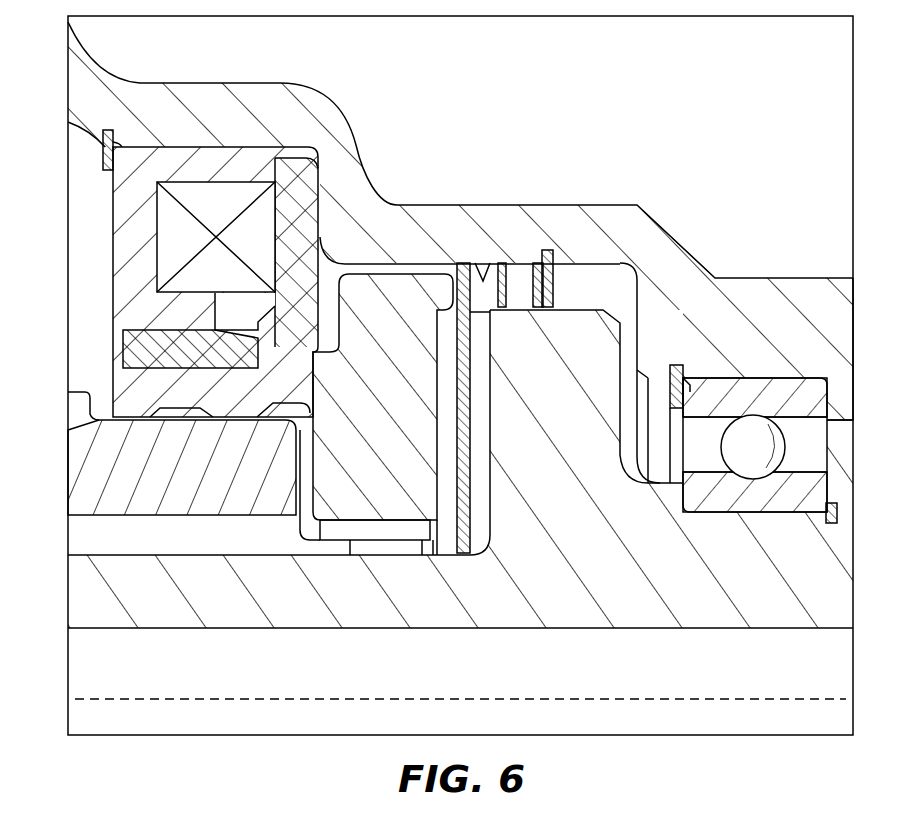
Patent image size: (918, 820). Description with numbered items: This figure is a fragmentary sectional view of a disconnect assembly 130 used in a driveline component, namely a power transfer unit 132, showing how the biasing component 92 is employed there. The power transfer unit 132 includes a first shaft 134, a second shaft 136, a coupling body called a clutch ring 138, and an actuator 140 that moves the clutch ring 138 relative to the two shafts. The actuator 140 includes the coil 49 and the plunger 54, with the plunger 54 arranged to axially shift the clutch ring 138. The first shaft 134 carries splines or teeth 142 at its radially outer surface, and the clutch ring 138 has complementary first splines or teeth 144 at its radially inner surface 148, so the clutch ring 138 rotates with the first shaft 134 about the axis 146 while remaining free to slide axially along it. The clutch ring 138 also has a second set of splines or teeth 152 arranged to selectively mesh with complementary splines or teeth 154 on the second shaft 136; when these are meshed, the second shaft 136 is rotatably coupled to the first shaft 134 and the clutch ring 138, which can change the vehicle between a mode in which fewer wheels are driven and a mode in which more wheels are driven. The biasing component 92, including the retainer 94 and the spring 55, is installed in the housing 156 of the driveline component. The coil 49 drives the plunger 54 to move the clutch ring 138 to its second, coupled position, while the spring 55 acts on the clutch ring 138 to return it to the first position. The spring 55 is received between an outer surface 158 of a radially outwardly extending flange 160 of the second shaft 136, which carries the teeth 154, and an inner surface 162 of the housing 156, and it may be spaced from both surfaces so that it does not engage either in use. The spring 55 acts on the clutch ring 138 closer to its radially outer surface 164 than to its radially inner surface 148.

The coil 49 is at (175, 223).
The plunger 54 is at (106, 365).
The spring 55 is at (517, 282).
The biasing component 92 is at (553, 290).
The retainer 94 is at (553, 262).
The disconnect assembly 130 is at (430, 238).
The power transfer unit 132 is at (853, 232).
The first shaft 134 is at (152, 485).
The second shaft 136 is at (632, 587).
The clutch ring 138 is at (410, 470).
The actuator 140 is at (100, 190).
The first shaft splines or teeth 142 is at (370, 555).
The first splines or teeth 144 is at (342, 530).
The axis 146 is at (793, 696).
The radially inner surface 148 is at (310, 548).
The second set of splines or teeth 152 is at (448, 335).
The second shaft splines or teeth 154 is at (482, 345).
The housing 156 is at (203, 102).
The outer surface 158 is at (612, 308).
The radially outwardly extending flange 160 is at (578, 445).
The inner surface 162 is at (497, 285).
The radially outer surface 164 is at (400, 262).